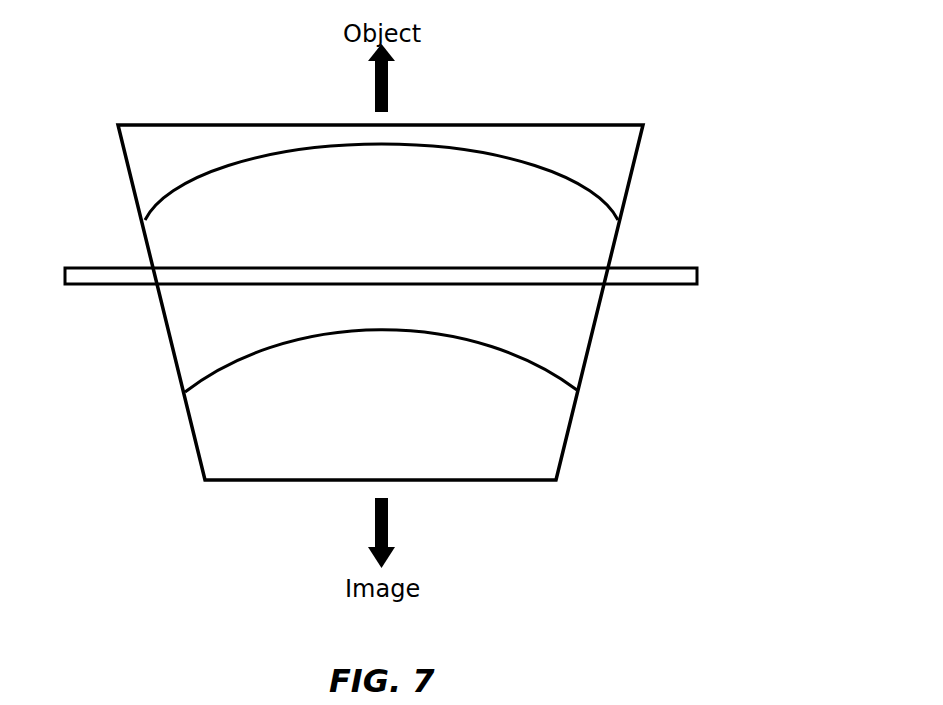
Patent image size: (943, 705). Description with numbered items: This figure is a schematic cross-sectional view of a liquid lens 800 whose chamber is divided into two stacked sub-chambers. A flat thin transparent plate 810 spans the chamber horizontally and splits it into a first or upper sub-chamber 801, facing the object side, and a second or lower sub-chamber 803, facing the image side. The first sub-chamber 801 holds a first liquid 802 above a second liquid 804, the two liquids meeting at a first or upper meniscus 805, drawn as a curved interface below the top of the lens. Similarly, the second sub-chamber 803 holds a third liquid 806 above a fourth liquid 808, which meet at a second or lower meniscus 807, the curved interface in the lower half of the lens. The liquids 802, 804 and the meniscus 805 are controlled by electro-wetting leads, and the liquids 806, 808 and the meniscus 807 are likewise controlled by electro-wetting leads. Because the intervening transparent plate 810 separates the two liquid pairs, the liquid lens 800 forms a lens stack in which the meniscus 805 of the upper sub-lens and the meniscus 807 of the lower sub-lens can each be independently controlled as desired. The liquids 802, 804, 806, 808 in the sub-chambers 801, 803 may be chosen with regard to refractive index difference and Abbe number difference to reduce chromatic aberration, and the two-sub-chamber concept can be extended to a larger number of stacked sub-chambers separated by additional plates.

The liquid lens 800 is at (742, 112).
The first sub-chamber 801 is at (166, 160).
The first liquid 802 is at (612, 165).
The second sub-chamber 803 is at (210, 321).
The second liquid 804 is at (582, 247).
The first meniscus 805 is at (510, 160).
The third liquid 806 is at (580, 325).
The second meniscus 807 is at (225, 367).
The fourth liquid 808 is at (553, 430).
The transparent plate 810 is at (698, 275).